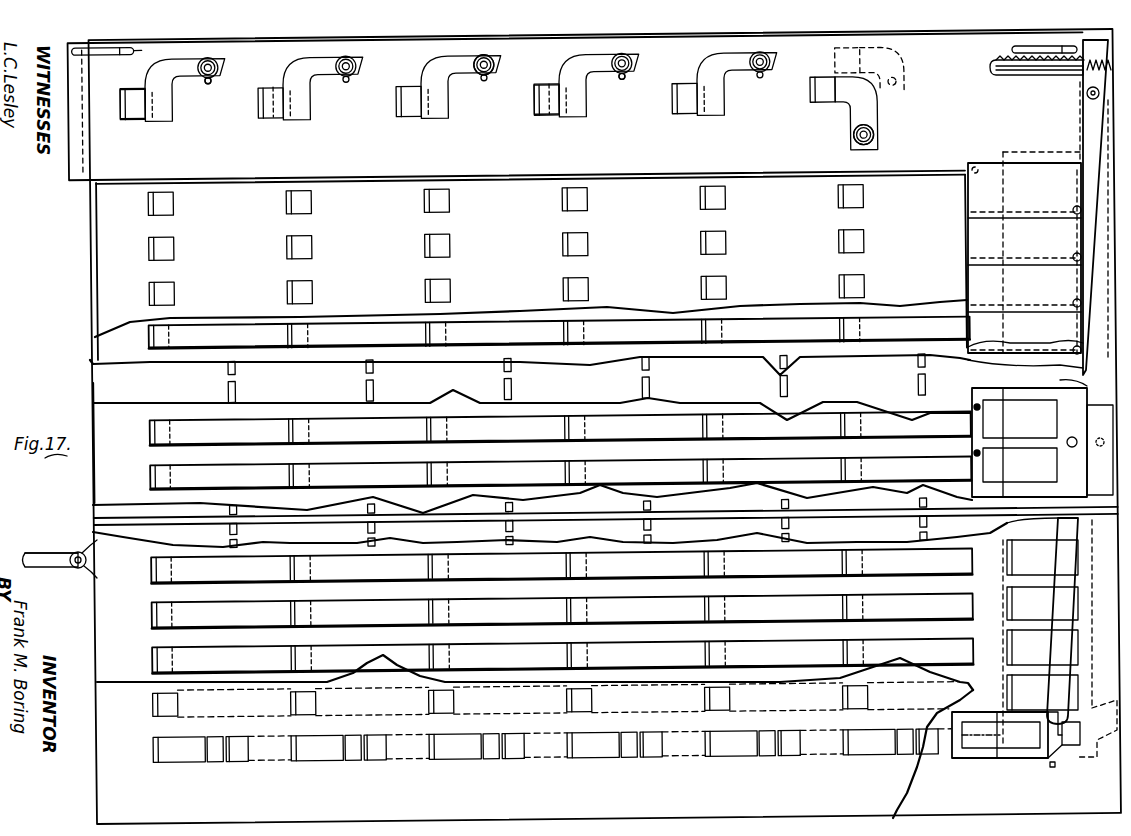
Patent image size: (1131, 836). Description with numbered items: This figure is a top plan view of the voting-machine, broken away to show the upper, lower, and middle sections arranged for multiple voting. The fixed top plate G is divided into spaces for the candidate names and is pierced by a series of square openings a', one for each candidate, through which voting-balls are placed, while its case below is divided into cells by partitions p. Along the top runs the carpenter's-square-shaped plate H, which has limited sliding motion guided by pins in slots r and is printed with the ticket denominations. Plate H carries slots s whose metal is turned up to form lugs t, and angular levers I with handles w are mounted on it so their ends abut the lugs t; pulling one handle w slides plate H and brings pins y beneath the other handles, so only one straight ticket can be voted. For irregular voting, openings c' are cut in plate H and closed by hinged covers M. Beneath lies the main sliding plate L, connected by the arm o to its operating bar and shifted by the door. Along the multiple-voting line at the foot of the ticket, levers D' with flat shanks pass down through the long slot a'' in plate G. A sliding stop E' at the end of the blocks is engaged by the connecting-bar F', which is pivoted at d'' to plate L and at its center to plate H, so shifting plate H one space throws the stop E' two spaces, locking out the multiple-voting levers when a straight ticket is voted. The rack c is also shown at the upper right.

The top plate G is at (605, 426).
The sliding plate H is at (576, 106).
The angular levers I is at (176, 78).
The lugs t is at (264, 97).
The slots s is at (272, 86).
The pins y is at (216, 86).
The handles w is at (502, 68).
The slots r is at (108, 56).
The rack c is at (1016, 62).
The main sliding plate L is at (1083, 82).
The pivot d'' is at (1072, 108).
The covers M is at (1025, 260).
The square openings a' is at (506, 245).
The long slot a'' is at (556, 735).
The partitions p is at (718, 514).
The arm o is at (41, 553).
The connecting-bar F' is at (1060, 637).
The openings c' is at (1042, 648).
The multiple-voting levers D' is at (552, 767).
The sliding stop E' is at (1004, 752).